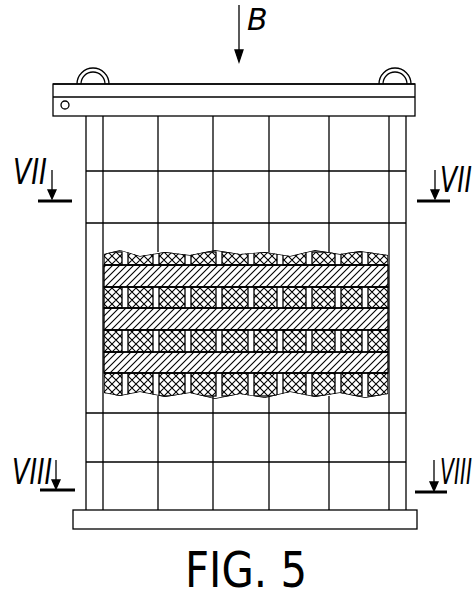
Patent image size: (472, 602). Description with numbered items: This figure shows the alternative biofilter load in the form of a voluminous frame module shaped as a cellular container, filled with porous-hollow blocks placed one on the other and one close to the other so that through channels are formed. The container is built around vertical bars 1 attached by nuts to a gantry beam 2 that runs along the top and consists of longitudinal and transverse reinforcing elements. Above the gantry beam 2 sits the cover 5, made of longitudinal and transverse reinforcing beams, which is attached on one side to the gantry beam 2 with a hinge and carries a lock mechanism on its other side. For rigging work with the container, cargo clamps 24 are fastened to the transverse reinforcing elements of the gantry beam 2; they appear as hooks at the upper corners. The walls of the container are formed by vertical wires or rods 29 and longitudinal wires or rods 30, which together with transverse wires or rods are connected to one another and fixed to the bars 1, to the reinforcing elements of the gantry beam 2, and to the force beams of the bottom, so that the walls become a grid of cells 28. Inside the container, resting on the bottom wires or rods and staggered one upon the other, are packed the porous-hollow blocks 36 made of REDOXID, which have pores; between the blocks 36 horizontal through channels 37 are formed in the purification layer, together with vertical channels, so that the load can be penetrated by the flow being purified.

The bars 1 is at (90, 267).
The gantry beam 2 is at (107, 107).
The cover 5 is at (178, 90).
The cargo clamps 24 is at (90, 70).
The cells 28 is at (127, 478).
The vertical wires or rods 29 is at (213, 490).
The longitudinal wires or rods 30 is at (350, 167).
The porous-hollow blocks 36 is at (377, 363).
The horizontal through channels 37 is at (117, 377).